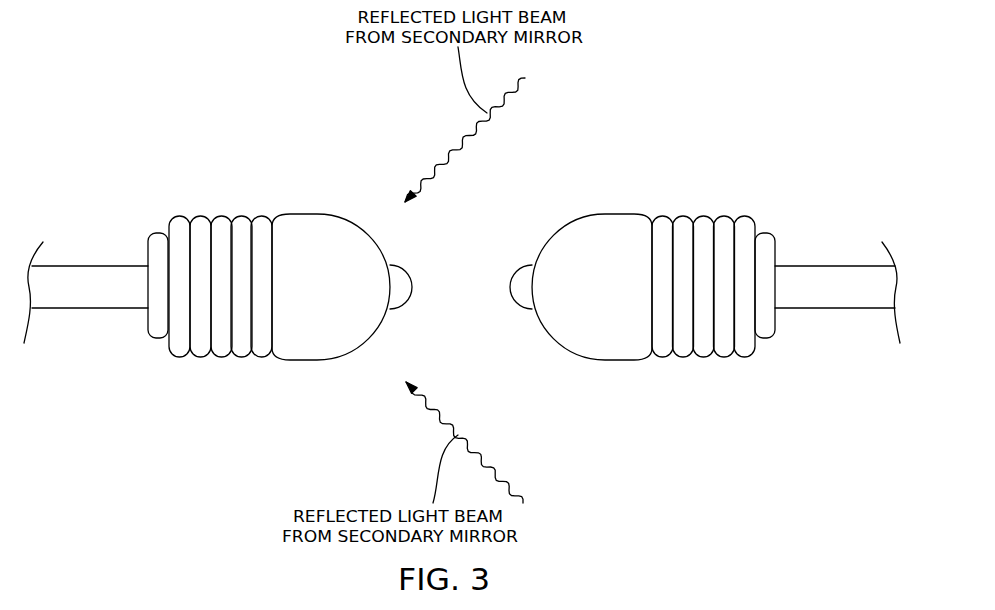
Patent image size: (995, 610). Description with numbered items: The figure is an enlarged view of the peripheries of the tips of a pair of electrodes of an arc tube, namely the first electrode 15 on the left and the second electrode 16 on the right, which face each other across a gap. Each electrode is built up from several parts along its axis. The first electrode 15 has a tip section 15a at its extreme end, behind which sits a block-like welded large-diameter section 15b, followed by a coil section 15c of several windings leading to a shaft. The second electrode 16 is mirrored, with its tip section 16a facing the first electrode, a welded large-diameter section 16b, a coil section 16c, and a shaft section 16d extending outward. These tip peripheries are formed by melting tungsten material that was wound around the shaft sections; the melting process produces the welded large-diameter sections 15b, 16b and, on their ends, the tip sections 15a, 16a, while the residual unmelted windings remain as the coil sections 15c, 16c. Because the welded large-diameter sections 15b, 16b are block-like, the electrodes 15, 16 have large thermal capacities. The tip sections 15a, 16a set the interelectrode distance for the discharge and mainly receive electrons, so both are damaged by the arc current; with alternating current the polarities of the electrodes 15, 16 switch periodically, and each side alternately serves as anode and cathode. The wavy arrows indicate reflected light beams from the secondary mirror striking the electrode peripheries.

The first electrode 15 is at (260, 188).
The tip section 15a is at (405, 265).
The welded large-diameter section 15b is at (327, 217).
The coil section 15c is at (240, 357).
The second electrode 16 is at (620, 190).
The tip section 16a is at (517, 303).
The welded large-diameter section 16b is at (563, 348).
The coil section 16c is at (678, 358).
The shaft section 16d is at (822, 308).